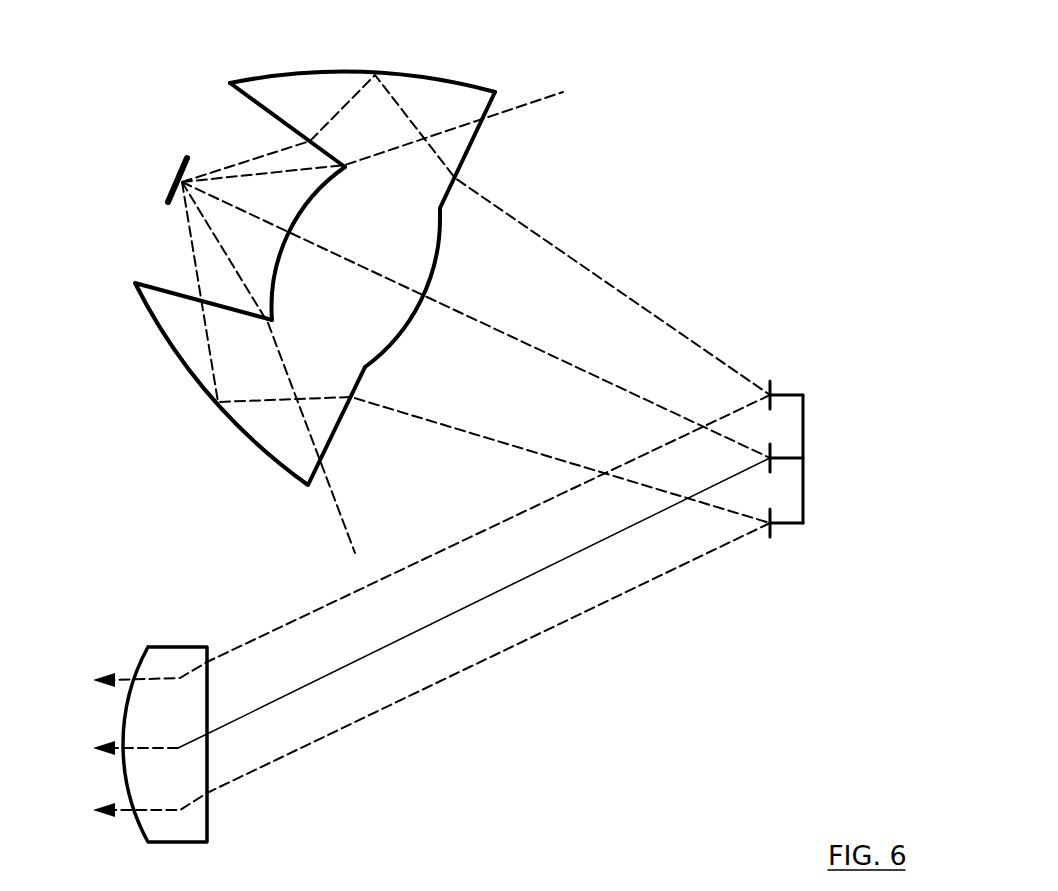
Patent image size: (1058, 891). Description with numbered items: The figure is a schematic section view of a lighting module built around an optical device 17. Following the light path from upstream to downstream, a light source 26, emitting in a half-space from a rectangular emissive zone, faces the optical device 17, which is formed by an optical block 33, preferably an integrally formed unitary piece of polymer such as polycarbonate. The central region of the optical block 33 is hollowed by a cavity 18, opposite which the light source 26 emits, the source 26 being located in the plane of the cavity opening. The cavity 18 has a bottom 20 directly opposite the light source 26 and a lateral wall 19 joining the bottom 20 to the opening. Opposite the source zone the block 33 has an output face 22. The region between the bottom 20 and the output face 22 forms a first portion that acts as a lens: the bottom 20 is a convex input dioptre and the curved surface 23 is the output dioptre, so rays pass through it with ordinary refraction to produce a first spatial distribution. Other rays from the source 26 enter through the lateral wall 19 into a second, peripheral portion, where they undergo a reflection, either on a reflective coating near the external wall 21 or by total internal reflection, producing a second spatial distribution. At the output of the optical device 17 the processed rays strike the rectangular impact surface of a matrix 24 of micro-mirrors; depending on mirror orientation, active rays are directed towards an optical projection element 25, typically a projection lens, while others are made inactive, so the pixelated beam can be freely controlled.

The optical device 17 is at (165, 386).
The cavity 18 is at (167, 253).
The lateral wall 19 is at (250, 98).
The bottom 20 is at (320, 188).
The external wall 21 is at (465, 83).
The output face 22 is at (472, 155).
The curved surface 23 is at (442, 233).
The matrix of micro-mirrors 24 is at (817, 392).
The optical projection element 25 is at (190, 828).
The light source 26 is at (175, 178).
The optical block 33 is at (177, 318).